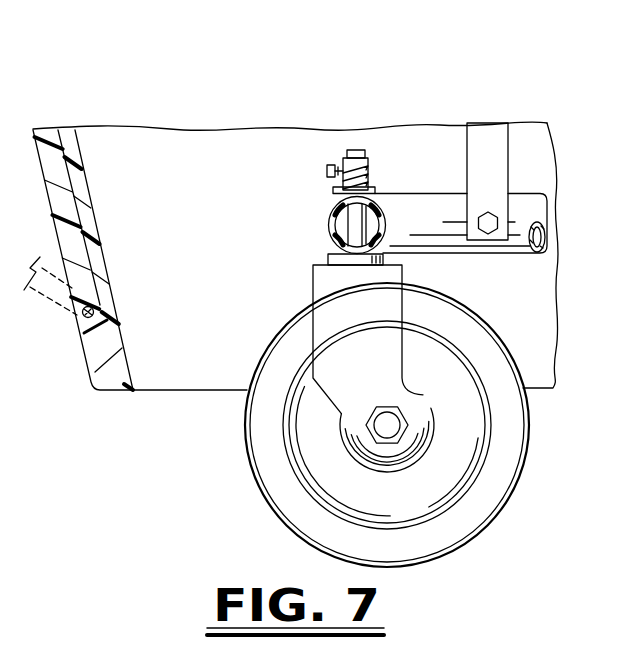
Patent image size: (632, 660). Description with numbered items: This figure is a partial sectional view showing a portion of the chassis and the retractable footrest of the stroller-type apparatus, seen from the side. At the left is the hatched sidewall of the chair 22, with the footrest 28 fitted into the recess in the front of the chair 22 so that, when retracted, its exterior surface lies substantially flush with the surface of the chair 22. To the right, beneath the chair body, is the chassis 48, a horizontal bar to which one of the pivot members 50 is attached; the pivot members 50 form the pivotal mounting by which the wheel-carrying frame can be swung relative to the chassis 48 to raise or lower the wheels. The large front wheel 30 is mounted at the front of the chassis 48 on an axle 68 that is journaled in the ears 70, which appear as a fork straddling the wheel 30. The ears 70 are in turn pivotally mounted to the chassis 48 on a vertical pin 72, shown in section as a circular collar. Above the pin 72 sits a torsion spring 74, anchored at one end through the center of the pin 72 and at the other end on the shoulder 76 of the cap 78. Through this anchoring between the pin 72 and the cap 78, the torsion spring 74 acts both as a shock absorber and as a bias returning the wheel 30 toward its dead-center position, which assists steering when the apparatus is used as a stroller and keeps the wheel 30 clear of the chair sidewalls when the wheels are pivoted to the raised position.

The chair 22 is at (248, 116).
The footrest 28 is at (60, 232).
The wheel 30 is at (399, 504).
The chassis 48 is at (426, 224).
The pivot member 50 is at (499, 164).
The axle 68 is at (379, 410).
The ear 70 is at (370, 329).
The pin 72 is at (352, 224).
The torsion spring 74 is at (370, 173).
The shoulder 76 is at (343, 190).
The cap 78 is at (347, 160).